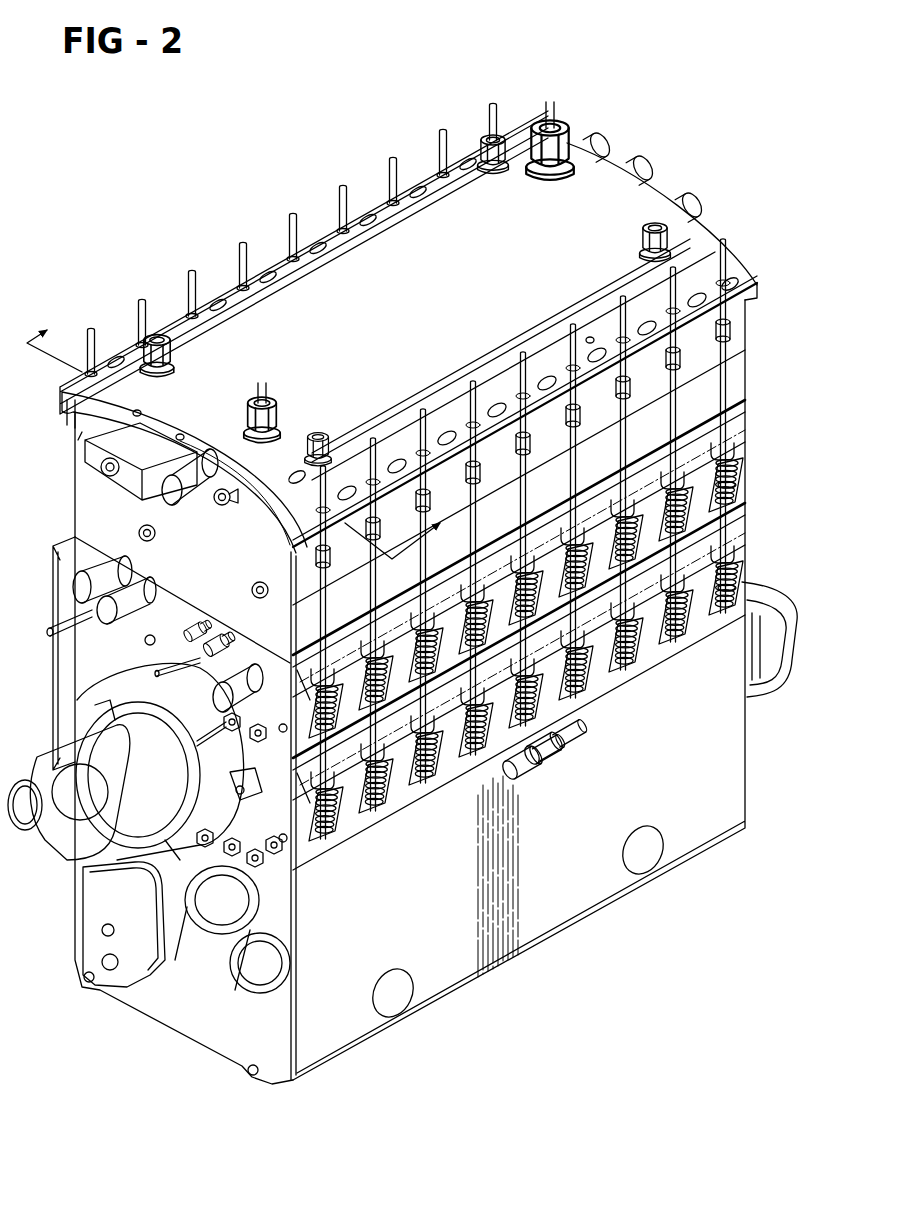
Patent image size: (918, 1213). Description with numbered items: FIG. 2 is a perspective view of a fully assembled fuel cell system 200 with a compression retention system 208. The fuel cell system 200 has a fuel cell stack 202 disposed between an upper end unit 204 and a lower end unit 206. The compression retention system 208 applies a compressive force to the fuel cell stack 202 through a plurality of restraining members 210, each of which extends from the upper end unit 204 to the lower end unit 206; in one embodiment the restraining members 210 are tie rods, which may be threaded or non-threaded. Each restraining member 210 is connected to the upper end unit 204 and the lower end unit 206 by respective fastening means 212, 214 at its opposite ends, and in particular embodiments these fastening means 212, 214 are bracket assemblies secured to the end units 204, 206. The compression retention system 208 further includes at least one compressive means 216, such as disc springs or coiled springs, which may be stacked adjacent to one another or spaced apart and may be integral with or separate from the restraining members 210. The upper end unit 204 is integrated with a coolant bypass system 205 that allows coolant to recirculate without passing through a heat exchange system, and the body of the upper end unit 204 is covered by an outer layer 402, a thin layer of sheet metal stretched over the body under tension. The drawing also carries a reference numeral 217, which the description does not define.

The fuel cell system 200 is at (690, 122).
The fuel cell stack 202 is at (64, 504).
The upper end unit 204 is at (94, 413).
The coolant bypass system 205 is at (201, 510).
The lower end unit 206 is at (255, 813).
The compression retention system 208 is at (762, 248).
The restraining members 210 is at (492, 103).
The fastening means 212 is at (735, 272).
The fastening means 214 is at (760, 435).
The compressive means 216 is at (727, 536).
The holes 217 is at (590, 333).
The outer layer 402 is at (458, 304).